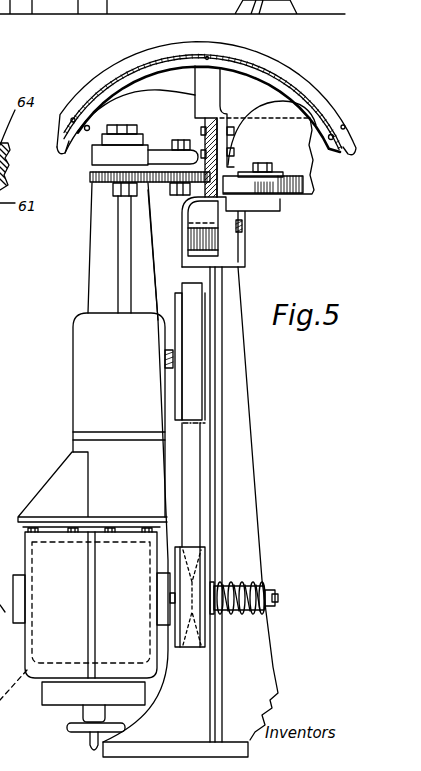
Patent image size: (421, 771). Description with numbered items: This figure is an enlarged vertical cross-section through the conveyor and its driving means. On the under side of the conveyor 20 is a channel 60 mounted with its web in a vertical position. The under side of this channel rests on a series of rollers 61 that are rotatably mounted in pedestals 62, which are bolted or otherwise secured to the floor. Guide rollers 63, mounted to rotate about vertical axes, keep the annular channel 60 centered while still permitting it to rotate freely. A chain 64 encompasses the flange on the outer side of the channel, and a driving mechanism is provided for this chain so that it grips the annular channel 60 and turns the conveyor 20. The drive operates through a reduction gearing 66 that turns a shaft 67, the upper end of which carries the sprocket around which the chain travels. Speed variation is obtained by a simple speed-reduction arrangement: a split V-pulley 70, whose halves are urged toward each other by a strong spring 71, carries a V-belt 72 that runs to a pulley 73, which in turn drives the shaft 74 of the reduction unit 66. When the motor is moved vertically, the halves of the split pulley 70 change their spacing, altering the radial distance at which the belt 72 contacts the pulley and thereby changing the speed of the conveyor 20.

The conveyor 20 is at (253, 87).
The channel 60 is at (205, 143).
The rollers 61 is at (210, 233).
The pedestals 62 is at (253, 667).
The guide rollers 63 is at (292, 190).
The chain 64 is at (93, 185).
The reduction gearing 66 is at (82, 340).
The shaft 67 is at (120, 248).
The split V-pulley 70 is at (205, 558).
The spring 71 is at (245, 583).
The V-belt 72 is at (193, 468).
The pulley 73 is at (200, 341).
The shaft of the reduction unit 74 is at (165, 373).